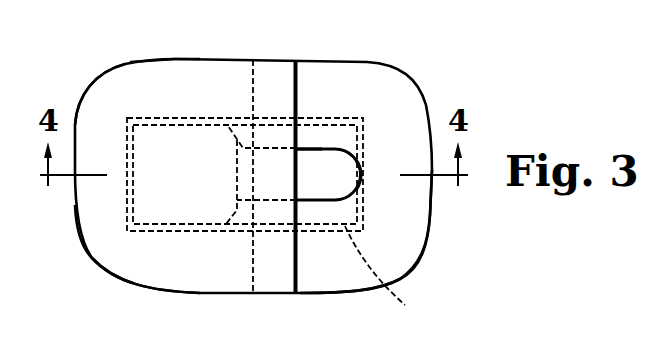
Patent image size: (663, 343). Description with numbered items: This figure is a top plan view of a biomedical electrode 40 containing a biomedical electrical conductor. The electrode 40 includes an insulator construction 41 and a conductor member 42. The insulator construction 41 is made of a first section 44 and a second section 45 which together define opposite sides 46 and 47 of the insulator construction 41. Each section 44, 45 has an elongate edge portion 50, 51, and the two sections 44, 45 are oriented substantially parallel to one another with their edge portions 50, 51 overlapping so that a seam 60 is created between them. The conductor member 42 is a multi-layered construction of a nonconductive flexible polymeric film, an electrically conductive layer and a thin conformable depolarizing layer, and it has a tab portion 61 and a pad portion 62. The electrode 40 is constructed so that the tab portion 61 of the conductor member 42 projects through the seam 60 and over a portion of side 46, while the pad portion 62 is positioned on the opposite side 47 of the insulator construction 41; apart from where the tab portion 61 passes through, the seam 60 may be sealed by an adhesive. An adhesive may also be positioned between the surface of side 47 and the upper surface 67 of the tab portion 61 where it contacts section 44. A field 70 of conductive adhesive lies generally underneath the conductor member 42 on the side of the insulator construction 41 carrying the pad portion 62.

The electrode 40 is at (372, 55).
The insulator construction 41 is at (152, 58).
The conductor member 42 is at (362, 172).
The first section 44 is at (108, 90).
The second section 45 is at (407, 217).
The side 46 is at (92, 235).
The opposite side 47 is at (407, 260).
The elongate edge portion 50 is at (297, 268).
The elongate edge portion 51 is at (253, 257).
The seam 60 is at (270, 75).
The tab portion 61 is at (341, 162).
The pad portion 62 is at (196, 135).
The upper surface 67 is at (321, 145).
The field of conductive adhesive 70 is at (389, 276).